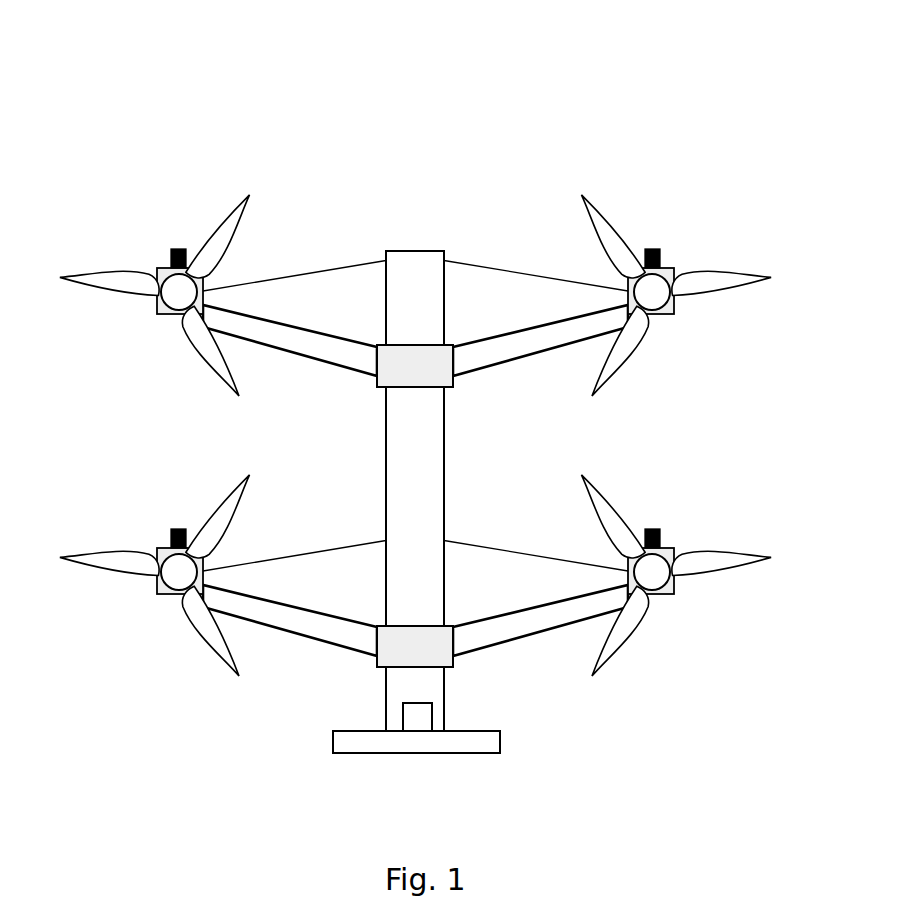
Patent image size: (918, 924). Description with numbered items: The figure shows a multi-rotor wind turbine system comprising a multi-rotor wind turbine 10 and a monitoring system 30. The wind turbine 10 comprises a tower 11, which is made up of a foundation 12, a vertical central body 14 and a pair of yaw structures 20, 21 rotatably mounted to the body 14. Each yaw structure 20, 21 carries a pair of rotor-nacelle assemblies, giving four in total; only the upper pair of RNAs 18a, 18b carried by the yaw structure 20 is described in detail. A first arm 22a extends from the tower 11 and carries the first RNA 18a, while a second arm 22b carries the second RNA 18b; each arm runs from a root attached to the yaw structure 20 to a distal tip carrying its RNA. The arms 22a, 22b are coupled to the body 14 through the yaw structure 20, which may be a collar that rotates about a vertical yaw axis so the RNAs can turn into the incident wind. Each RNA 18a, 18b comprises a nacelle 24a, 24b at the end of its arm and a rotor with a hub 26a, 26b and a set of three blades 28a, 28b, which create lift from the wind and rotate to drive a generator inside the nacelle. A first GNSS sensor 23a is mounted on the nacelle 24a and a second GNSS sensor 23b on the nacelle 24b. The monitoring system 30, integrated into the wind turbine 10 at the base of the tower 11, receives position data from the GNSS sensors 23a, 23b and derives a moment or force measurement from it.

The multi-rotor wind turbine 10 is at (461, 101).
The tower 11 is at (471, 486).
The foundation 12 is at (503, 743).
The vertical central body 14 is at (385, 485).
The first rotor-nacelle assembly 18a is at (736, 298).
The second rotor-nacelle assembly 18b is at (152, 263).
The yaw structure 20 is at (428, 380).
The yaw structure 21 is at (415, 647).
The first arm 22a is at (563, 312).
The second arm 22b is at (253, 313).
The first GNSS sensor 23a is at (663, 257).
The second GNSS sensor 23b is at (172, 257).
The nacelle 24a is at (660, 315).
The nacelle 24b is at (172, 315).
The hub 26a is at (655, 300).
The hub 26b is at (177, 298).
The blades 28a is at (607, 215).
The blades 28b is at (215, 252).
The monitoring system 30 is at (413, 720).